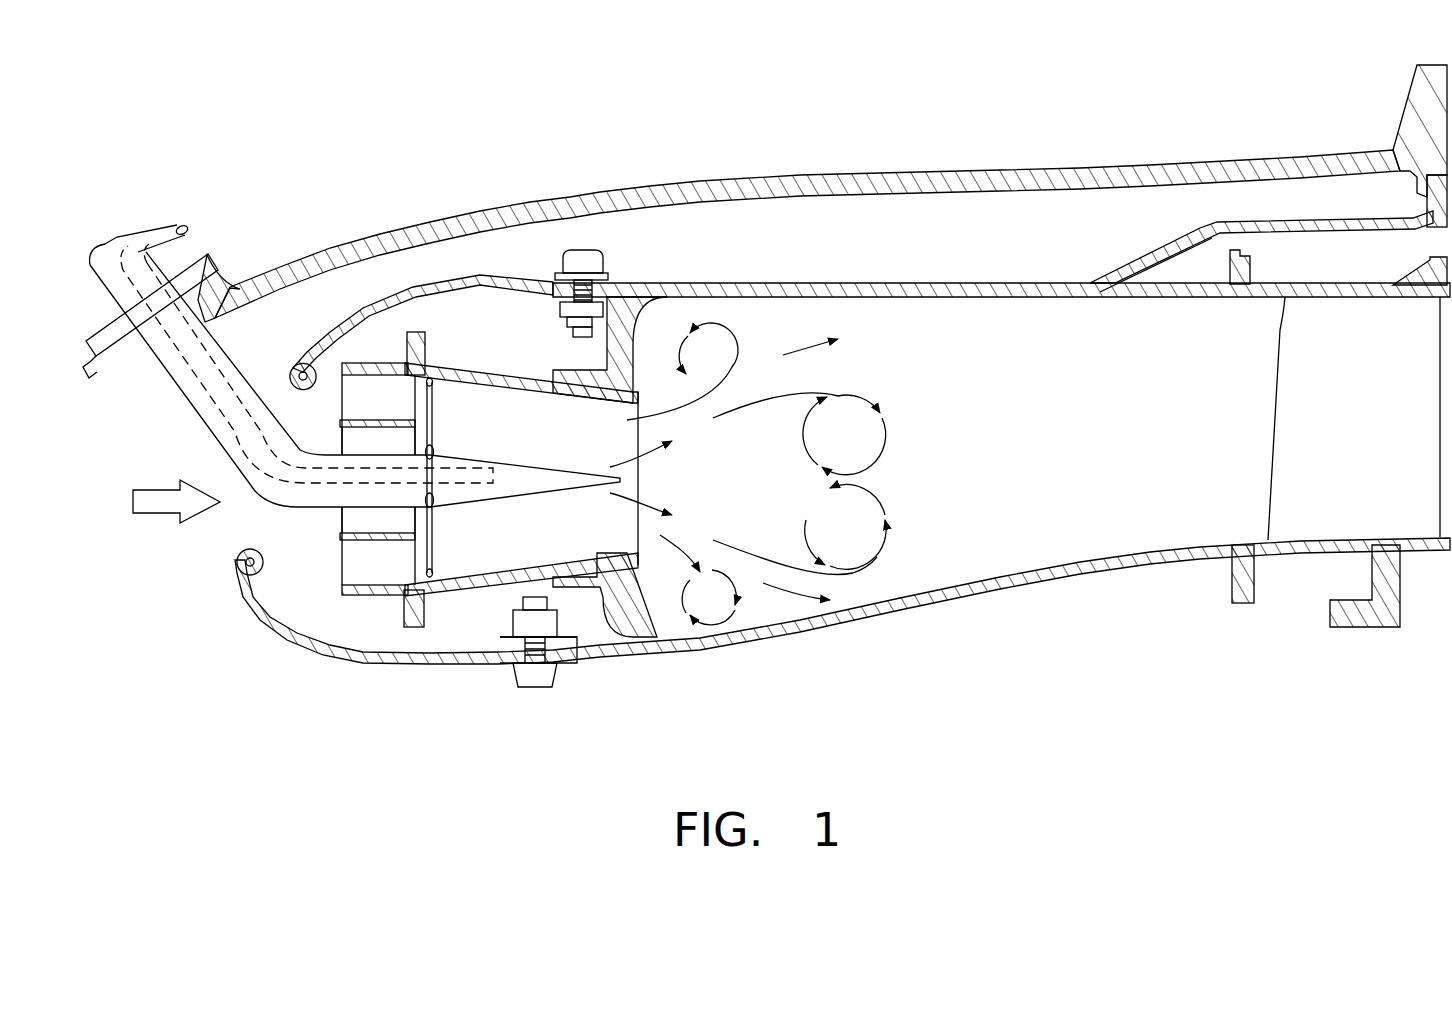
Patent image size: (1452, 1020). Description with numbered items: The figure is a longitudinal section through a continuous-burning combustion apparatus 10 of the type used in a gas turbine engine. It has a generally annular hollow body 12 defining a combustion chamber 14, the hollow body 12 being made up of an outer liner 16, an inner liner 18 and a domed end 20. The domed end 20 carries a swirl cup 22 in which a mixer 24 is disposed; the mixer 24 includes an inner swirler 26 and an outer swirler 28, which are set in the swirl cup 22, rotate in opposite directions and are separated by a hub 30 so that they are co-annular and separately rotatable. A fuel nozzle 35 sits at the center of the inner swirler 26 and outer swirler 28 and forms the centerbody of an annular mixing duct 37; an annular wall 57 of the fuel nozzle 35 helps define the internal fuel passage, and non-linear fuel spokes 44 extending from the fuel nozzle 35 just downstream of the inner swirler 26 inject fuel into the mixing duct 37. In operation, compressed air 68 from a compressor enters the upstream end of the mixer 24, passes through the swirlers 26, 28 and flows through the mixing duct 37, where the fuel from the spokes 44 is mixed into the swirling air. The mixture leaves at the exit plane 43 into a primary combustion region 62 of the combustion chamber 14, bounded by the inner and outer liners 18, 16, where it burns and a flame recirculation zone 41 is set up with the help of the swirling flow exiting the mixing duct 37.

The continuous-burning combustion apparatus 10 is at (438, 735).
The hollow body 12 is at (878, 262).
The combustion chamber 14 is at (800, 488).
The outer liner 16 is at (858, 298).
The inner liner 18 is at (920, 593).
The domed end 20 is at (633, 340).
The swirl cup 22 is at (343, 603).
The mixer 24 is at (333, 556).
The inner swirler 26 is at (335, 442).
The outer swirler 28 is at (335, 388).
The hub 30 is at (362, 420).
The fuel nozzle 35 is at (202, 431).
The annular mixing duct 37 is at (440, 365).
The flame recirculation zone 41 is at (783, 384).
The exit plane 43 is at (640, 545).
The non-linear fuel spokes 44 is at (437, 415).
The annular wall 57 is at (447, 453).
The primary combustion region 62 is at (713, 456).
The compressed air 68 is at (153, 513).